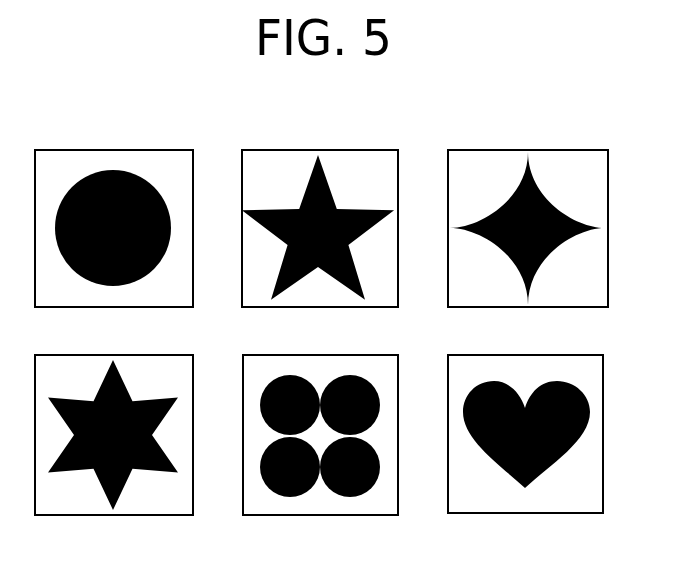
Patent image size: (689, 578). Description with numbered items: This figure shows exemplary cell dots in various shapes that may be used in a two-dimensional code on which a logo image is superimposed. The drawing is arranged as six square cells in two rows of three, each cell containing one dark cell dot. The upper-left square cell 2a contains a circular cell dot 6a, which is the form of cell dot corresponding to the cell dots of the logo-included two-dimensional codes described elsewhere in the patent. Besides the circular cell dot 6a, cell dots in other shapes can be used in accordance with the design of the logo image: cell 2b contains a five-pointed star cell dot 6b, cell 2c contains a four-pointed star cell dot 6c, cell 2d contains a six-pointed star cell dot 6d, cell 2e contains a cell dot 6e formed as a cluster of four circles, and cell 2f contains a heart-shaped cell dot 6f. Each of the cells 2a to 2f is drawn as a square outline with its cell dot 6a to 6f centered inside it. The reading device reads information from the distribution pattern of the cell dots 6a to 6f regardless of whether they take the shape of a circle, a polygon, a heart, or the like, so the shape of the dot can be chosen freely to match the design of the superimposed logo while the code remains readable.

The square cell 2a is at (172, 150).
The cell 2b is at (377, 150).
The cell 2c is at (584, 150).
The cell 2d is at (173, 355).
The cell 2e is at (376, 355).
The cell 2f is at (583, 355).
The circular cell dot 6a is at (170, 216).
The cell dot 6b is at (378, 209).
The cell dot 6c is at (580, 218).
The cell dot 6d is at (177, 398).
The cell dot 6e is at (365, 402).
The cell dot 6f is at (580, 396).